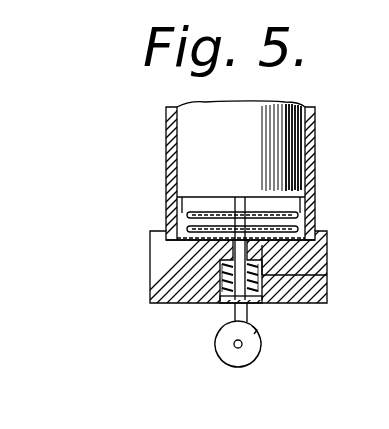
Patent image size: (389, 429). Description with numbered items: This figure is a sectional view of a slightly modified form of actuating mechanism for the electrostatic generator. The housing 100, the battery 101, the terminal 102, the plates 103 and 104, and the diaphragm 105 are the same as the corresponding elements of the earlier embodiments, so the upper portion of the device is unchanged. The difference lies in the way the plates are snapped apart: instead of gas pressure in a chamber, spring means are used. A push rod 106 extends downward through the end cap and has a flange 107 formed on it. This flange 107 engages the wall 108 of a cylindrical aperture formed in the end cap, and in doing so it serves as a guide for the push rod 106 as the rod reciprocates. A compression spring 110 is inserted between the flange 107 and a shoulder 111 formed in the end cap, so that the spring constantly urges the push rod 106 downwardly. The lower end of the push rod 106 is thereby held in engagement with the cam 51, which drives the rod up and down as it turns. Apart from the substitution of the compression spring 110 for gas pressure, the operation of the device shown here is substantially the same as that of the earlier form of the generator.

The housing 100 is at (168, 128).
The battery 101 is at (226, 134).
The terminal 102 is at (242, 215).
The plate 103 is at (213, 215).
The plate 104 is at (307, 233).
The diaphragm 105 is at (166, 258).
The push rod 106 is at (248, 317).
The flange 107 is at (228, 303).
The wall 108 is at (225, 245).
The compression spring 110 is at (327, 275).
The shoulder 111 is at (323, 248).
The cam 51 is at (262, 348).